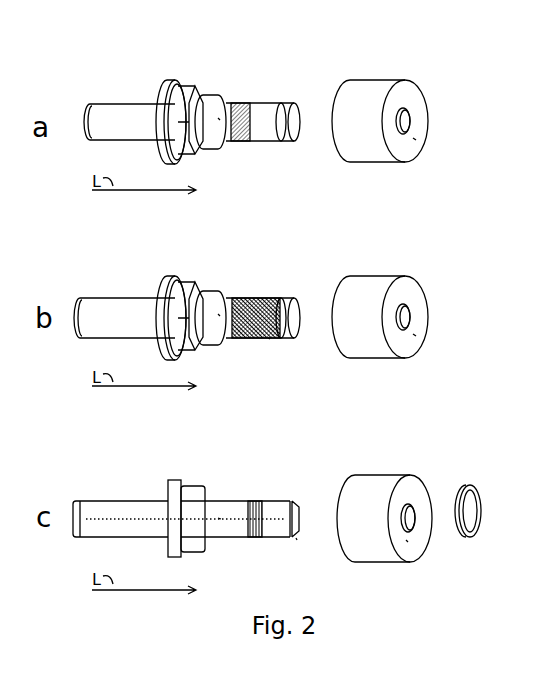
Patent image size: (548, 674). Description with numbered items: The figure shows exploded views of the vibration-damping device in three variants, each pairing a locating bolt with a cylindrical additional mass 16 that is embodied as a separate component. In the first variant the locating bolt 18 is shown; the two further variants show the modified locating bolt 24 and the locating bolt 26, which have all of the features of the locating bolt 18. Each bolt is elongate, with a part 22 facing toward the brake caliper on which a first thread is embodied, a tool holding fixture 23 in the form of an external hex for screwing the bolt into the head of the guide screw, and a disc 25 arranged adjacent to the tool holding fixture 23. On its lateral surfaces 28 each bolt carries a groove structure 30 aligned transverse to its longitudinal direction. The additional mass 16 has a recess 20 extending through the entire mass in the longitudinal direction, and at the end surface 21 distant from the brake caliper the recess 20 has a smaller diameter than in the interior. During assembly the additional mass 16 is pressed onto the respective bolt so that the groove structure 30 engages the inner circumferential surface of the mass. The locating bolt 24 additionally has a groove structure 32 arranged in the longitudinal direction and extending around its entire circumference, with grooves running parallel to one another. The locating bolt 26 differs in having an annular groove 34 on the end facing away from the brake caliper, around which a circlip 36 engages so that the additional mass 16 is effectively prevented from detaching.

In FIG. 2a, the additional mass 16 is at (384, 80).
In FIG. 2b, the additional mass 16 is at (380, 292).
In FIG. 2c, the additional mass 16 is at (380, 475).
In FIG. 2a, the locating bolt 18 is at (252, 74).
In FIG. 2a, the recess 20 is at (407, 112).
In FIG. 2b, the recess 20 is at (444, 291).
In FIG. 2c, the recess 20 is at (413, 506).
In FIG. 2a, the end surface 21 is at (414, 139).
In FIG. 2b, the end surface 21 is at (446, 342).
In FIG. 2c, the end surface 21 is at (407, 541).
In FIG. 2a, the part of the locating bolt facing toward the brake caliper 22 is at (116, 104).
In FIG. 2b, the part of the locating bolt facing toward the brake caliper 22 is at (187, 288).
In FIG. 2c, the part of the locating bolt facing toward the brake caliper 22 is at (120, 501).
In FIG. 2a, the tool holding fixture 23 is at (188, 110).
In FIG. 2b, the tool holding fixture 23 is at (194, 290).
In FIG. 2c, the tool holding fixture 23 is at (192, 510).
In FIG. 2b, the locating bolt 24 is at (267, 242).
In FIG. 2a, the disc 25 is at (163, 100).
In FIG. 2b, the disc 25 is at (170, 296).
In FIG. 2c, the disc 25 is at (175, 490).
In FIG. 2c, the locating bolt 26 is at (257, 474).
In FIG. 2a, the lateral surfaces 28 is at (218, 117).
In FIG. 2b, the lateral surfaces 28 is at (232, 271).
In FIG. 2c, the lateral surfaces 28 is at (220, 517).
In FIG. 2a, the groove structure 30 is at (246, 108).
In FIG. 2b, the groove structure 30 is at (275, 297).
In FIG. 2c, the groove structure 30 is at (258, 500).
In FIG. 2b, the groove structure 32 is at (279, 359).
In FIG. 2c, the annular groove 34 is at (296, 540).
In FIG. 2c, the circlip 36 is at (477, 498).